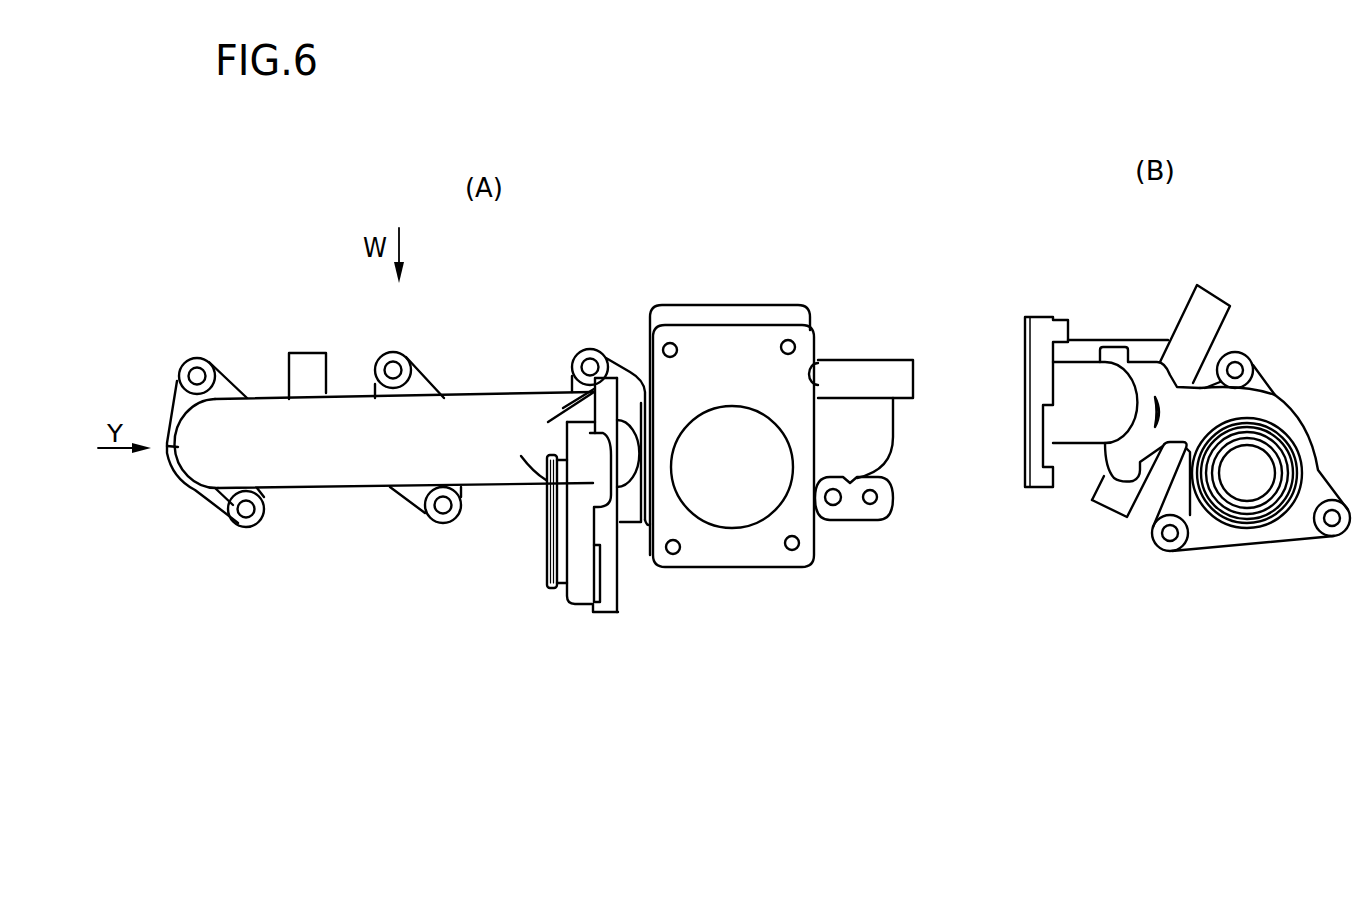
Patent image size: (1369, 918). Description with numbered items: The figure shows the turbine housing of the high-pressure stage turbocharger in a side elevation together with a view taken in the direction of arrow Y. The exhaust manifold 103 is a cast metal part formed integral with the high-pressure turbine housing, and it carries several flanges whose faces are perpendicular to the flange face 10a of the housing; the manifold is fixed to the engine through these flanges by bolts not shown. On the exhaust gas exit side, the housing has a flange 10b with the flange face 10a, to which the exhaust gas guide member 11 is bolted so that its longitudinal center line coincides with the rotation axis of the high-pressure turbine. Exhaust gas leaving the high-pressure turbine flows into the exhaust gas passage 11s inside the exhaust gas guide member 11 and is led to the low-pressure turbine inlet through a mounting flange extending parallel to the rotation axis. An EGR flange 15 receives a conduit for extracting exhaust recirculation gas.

The flange face 10a is at (612, 582).
The flange 10b is at (617, 378).
The exhaust gas guide member 11 is at (1147, 345).
The exhaust gas passage 11s is at (752, 512).
The EGR flange 15 is at (857, 375).
The exhaust manifold 103 is at (378, 463).